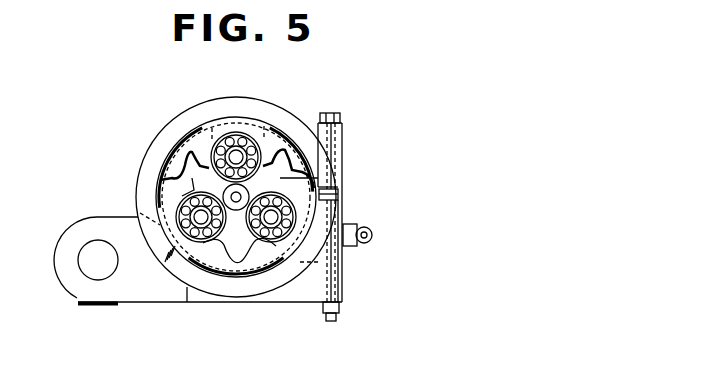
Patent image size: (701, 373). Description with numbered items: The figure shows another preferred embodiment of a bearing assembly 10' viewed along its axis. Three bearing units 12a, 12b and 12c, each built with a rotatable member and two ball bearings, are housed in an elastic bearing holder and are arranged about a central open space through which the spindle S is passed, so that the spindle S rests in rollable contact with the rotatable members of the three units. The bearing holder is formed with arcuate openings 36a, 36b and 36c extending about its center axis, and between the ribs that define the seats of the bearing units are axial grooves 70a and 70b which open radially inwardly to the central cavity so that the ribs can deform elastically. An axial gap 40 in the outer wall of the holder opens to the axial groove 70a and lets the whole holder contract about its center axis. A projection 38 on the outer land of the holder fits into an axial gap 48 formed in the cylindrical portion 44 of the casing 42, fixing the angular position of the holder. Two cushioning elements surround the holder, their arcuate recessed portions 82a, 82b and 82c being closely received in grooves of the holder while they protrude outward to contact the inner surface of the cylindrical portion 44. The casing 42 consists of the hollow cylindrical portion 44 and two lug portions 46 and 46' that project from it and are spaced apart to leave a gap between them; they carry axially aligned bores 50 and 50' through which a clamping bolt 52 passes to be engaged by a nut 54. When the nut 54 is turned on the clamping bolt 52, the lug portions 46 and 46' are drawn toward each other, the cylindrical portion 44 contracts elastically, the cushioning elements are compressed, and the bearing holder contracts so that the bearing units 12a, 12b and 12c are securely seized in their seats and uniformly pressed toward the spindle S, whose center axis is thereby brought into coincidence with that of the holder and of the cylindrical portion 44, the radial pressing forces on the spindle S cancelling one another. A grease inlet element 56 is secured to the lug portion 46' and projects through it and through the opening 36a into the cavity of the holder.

The bearing assembly 10' is at (98, 175).
The bearing unit 12a is at (290, 248).
The bearing unit 12b is at (254, 125).
The bearing unit 12c is at (188, 254).
The arcuate opening 36a is at (288, 278).
The arcuate opening 36b is at (213, 128).
The arcuate opening 36c is at (140, 213).
The projection 38 is at (338, 215).
The axial gap 40 is at (340, 172).
The casing 42 is at (188, 307).
The cylindrical portion 44 is at (155, 260).
The lug portion 46 is at (370, 156).
The lug portion 46' is at (366, 251).
The axial gap 48 is at (338, 197).
The bore 50 is at (359, 150).
The bore 50' is at (363, 251).
The clamping bolt 52 is at (341, 118).
The nut 54 is at (338, 322).
The grease inlet element 56 is at (372, 238).
The axial groove 70a is at (240, 262).
The axial groove 70b is at (188, 157).
The arcuate recessed portion 82a is at (288, 133).
The arcuate recessed portion 82b is at (170, 152).
The arcuate recessed portion 82c is at (222, 278).
The spindle S is at (178, 178).